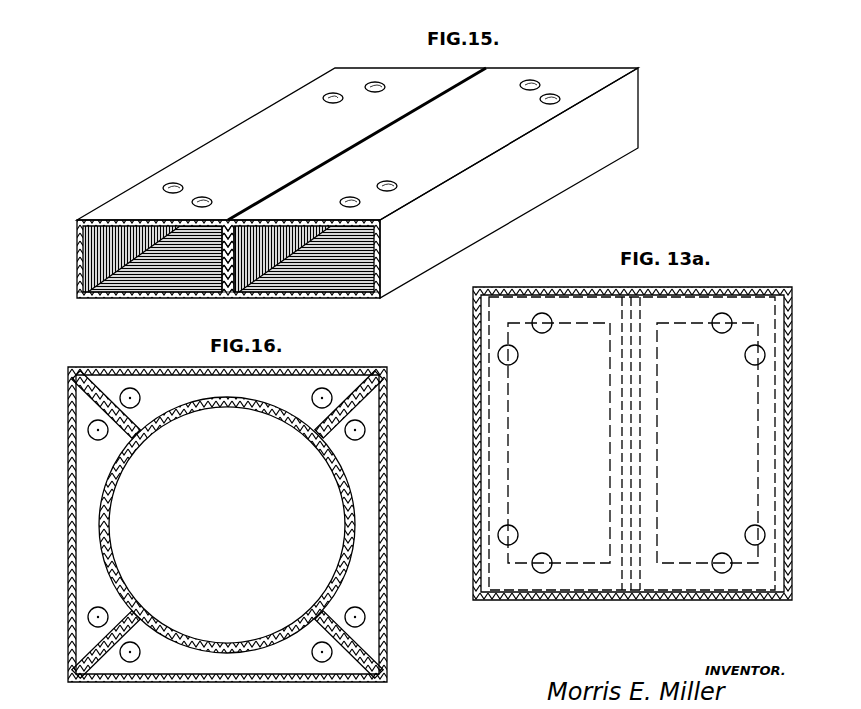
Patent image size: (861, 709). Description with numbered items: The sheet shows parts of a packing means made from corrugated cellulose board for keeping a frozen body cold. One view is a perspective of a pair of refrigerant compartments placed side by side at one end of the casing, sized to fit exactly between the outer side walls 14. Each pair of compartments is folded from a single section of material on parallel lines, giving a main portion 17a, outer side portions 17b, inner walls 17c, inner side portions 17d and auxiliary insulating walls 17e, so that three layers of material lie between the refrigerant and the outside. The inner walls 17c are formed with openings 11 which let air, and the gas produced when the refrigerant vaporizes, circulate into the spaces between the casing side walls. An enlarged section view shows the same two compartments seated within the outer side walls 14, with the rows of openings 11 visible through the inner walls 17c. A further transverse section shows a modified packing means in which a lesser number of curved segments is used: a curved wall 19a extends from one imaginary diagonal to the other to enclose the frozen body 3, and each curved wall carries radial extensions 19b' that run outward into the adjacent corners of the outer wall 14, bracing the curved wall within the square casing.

In FIG. 16, the cylindrical tube 3 is at (336, 492).
In FIG. 15, the openings 11 is at (375, 83).
In FIG. 13A, the openings 11 is at (518, 357).
In FIG. 16, the openings 11 is at (311, 396).
In FIG. 13A, the outer side walls 14 is at (792, 405).
In FIG. 16, the outer side walls 14 is at (387, 585).
In FIG. 15, the main portion 17a is at (346, 298).
In FIG. 15, the outer side portions 17b is at (76, 255).
In FIG. 13A, the outer side portions 17b is at (788, 452).
In FIG. 15, the inner walls 17c is at (220, 156).
In FIG. 13A, the inner walls 17c is at (699, 578).
In FIG. 15, the inner side portions 17d is at (185, 220).
In FIG. 15, the auxiliary insulating walls 17e is at (240, 298).
In FIG. 16, the tube wall 19a is at (336, 576).
In FIG. 16, the radial extensions 19b' is at (255, 511).